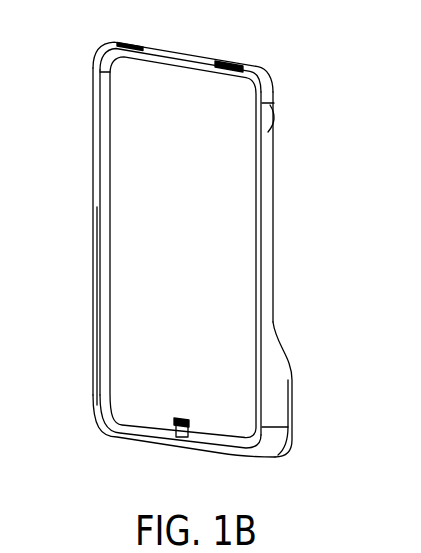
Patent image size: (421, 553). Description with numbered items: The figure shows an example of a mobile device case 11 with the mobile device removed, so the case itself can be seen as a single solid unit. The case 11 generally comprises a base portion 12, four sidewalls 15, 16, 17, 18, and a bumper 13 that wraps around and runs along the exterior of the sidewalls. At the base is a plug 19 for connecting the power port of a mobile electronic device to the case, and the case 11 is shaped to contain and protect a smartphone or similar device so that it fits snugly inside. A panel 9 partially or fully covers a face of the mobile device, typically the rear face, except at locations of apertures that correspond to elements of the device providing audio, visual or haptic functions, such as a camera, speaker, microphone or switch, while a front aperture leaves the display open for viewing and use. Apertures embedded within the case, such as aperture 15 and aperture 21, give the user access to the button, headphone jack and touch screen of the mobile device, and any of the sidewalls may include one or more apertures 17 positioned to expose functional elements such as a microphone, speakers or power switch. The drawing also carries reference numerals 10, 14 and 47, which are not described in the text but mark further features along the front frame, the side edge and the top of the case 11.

The panel 9 is at (187, 226).
The front bezel of case 10 is at (103, 97).
The mobile device case 11 is at (185, 46).
The base portion 12 is at (275, 372).
The bumper 13 is at (272, 235).
The left sidewall inner edge 14 is at (97, 247).
The sidewall 15 is at (146, 44).
The sidewall 16 is at (272, 190).
The sidewall 17 is at (93, 190).
The sidewall 18 is at (207, 450).
The plug 19 is at (193, 422).
The aperture 21 is at (237, 63).
The sensor opening 47 is at (116, 43).